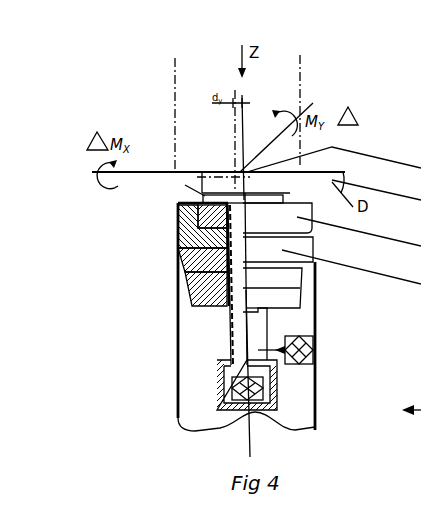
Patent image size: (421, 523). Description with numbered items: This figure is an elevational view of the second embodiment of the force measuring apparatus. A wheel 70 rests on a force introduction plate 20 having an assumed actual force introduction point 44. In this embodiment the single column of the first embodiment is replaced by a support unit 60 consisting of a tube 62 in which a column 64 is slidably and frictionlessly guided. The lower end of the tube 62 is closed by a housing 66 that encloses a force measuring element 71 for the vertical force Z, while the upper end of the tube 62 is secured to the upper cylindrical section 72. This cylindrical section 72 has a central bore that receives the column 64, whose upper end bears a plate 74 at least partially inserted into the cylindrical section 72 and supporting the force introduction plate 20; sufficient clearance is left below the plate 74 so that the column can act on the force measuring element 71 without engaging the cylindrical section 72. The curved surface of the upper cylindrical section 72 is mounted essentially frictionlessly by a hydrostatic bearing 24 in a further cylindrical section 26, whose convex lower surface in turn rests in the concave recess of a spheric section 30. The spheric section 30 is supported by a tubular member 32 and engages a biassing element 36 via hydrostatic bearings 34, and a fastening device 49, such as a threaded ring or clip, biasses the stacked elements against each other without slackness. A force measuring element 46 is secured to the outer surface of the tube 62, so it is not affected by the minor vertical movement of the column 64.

The wheel 70 is at (200, 125).
The assumed actual force introduction point 44 is at (235, 172).
The force introduction plate 20 is at (185, 185).
The plate 74 is at (198, 205).
The upper cylindrical section 72 is at (178, 208).
The hydrostatic bearing 24 is at (178, 225).
The cylindrical section 26 is at (178, 242).
The spheric section 30 is at (180, 260).
The hydrostatic bearings 34 is at (230, 290).
The biassing element 36 is at (245, 305).
The fastening device 49 is at (215, 313).
The column 64 is at (245, 327).
The tube 62 is at (228, 350).
The housing 66 is at (207, 422).
The tubular member 32 is at (245, 424).
The support unit 60 is at (318, 322).
The force measuring element 46 is at (316, 350).
The force measuring element 71 is at (277, 402).